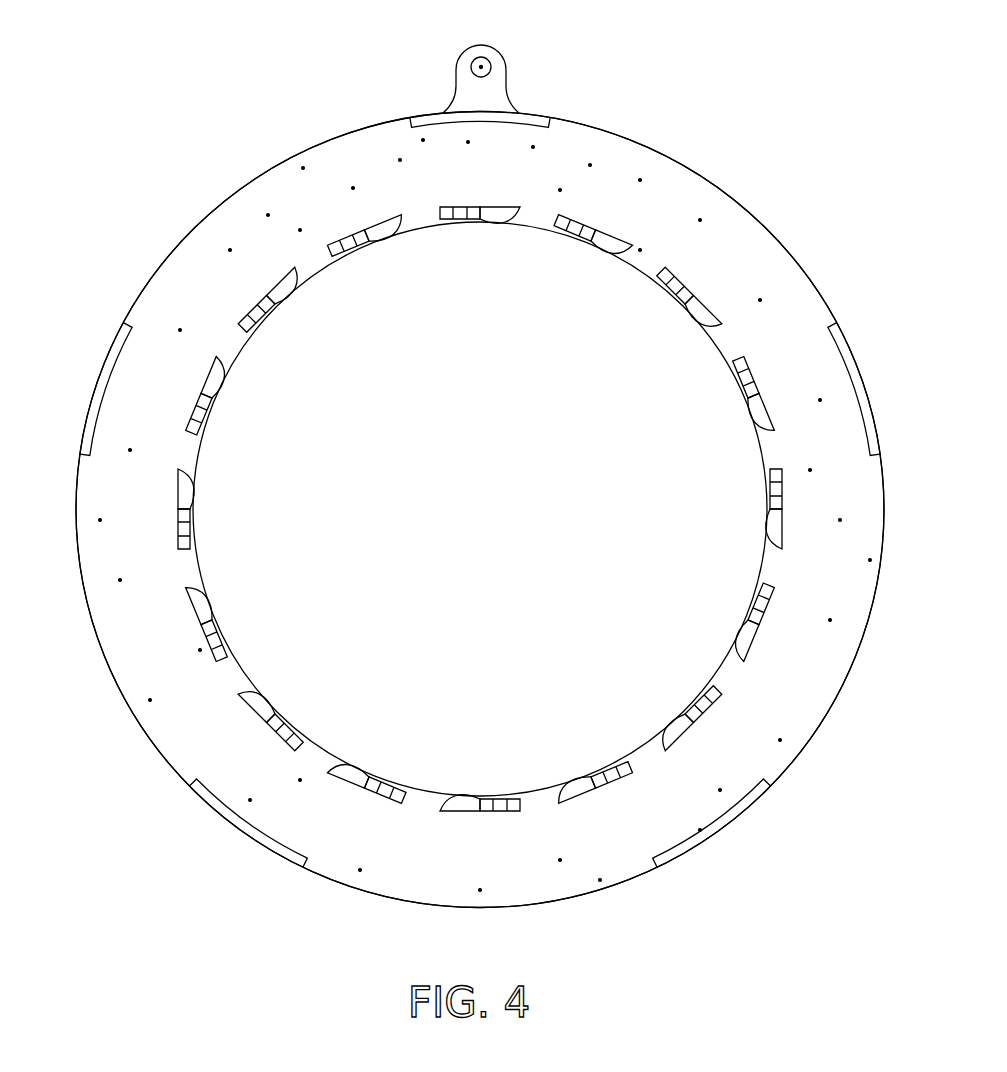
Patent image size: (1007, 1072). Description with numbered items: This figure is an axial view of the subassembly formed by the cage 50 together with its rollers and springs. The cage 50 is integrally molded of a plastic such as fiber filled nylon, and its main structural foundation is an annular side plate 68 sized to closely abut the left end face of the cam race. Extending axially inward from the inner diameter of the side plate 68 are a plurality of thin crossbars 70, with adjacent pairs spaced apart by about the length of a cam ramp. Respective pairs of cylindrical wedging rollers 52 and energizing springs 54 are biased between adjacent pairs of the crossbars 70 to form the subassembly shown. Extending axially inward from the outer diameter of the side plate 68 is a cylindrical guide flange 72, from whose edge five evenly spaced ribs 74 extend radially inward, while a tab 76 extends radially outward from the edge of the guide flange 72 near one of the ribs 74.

The cage 50 is at (224, 197).
The wedging rollers 52 is at (398, 236).
The energizing springs 54 is at (344, 236).
The annular side plate 68 is at (605, 197).
The crossbars 70 is at (533, 220).
The cylindrical guide flange 72 is at (332, 138).
The ribs 74 is at (431, 112).
The tab 76 is at (493, 88).